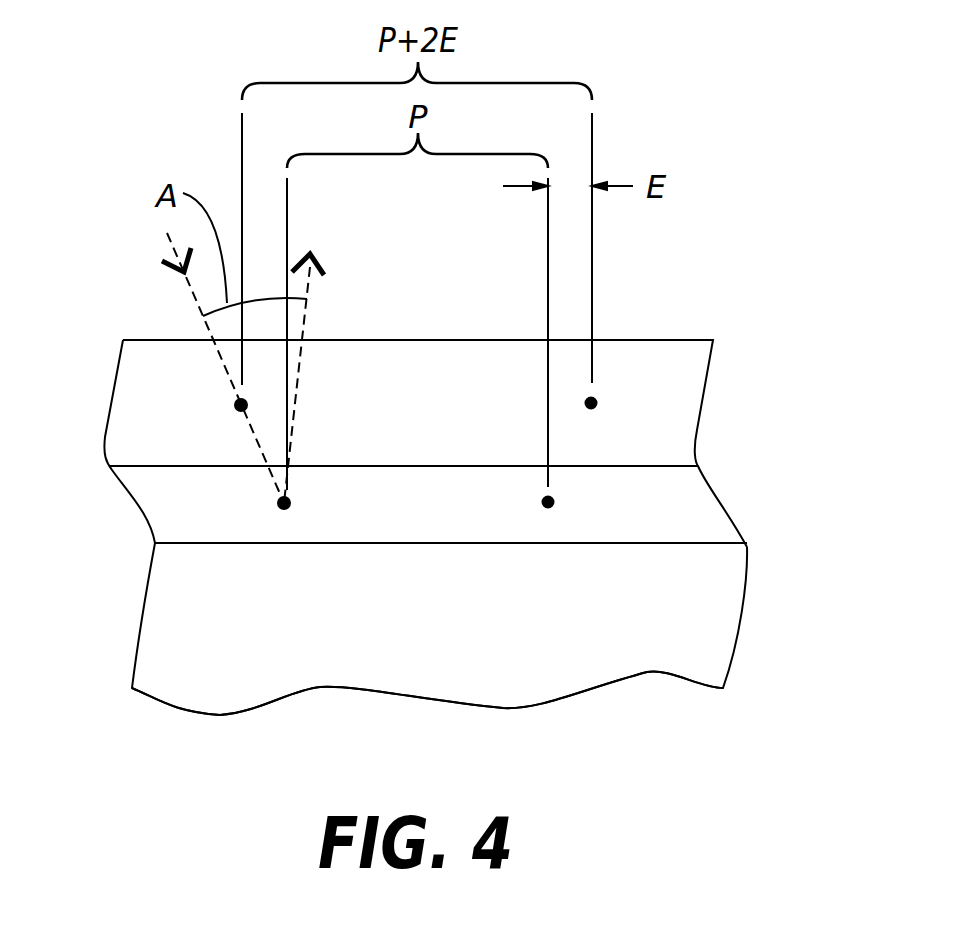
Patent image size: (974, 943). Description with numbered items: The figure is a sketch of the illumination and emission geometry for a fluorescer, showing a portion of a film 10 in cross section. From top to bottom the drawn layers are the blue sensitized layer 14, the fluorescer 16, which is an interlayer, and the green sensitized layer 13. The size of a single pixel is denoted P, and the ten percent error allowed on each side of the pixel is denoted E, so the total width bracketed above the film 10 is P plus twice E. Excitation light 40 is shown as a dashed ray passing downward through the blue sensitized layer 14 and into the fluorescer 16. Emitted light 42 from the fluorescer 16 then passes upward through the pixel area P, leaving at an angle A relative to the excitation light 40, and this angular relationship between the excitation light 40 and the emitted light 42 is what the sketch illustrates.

The film 10 is at (840, 544).
The green sensitized layer 13 is at (518, 642).
The blue sensitized layer 14 is at (520, 423).
The fluorescer 16 is at (520, 523).
The excitation light 40 is at (188, 286).
The emitted light 42 is at (307, 318).